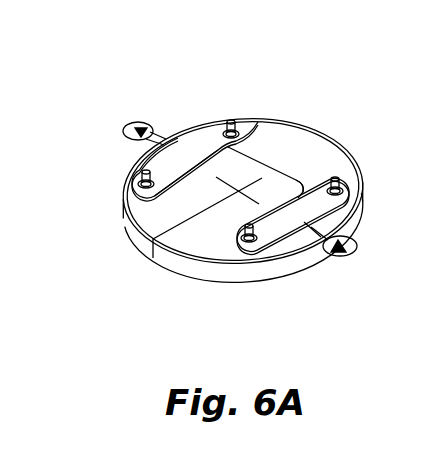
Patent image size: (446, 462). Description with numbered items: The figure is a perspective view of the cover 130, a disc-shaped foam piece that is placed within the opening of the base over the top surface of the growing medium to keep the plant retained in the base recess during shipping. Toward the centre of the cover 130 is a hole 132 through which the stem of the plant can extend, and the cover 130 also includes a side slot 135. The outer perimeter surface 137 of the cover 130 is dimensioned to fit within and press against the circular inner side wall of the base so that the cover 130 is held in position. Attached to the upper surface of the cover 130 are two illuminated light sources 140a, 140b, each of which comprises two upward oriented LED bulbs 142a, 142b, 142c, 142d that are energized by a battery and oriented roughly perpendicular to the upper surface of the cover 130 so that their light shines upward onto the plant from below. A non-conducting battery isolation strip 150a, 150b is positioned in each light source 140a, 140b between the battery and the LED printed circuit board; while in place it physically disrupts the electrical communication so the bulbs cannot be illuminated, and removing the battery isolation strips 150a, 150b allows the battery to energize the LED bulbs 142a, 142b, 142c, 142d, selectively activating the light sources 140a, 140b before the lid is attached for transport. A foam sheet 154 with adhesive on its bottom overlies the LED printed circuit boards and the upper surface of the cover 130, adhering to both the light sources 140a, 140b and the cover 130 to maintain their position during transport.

The cover 130 is at (105, 221).
The hole 132 is at (240, 190).
The side slot 135 is at (196, 214).
The outer perimeter surface 137 is at (309, 258).
The illuminated light source 140a is at (188, 148).
The illuminated light source 140b is at (323, 165).
The LED bulb 142a is at (138, 182).
The LED bulb 142b is at (250, 248).
The LED bulb 142c is at (241, 115).
The LED bulb 142d is at (341, 186).
The battery isolation strip 150a is at (128, 126).
The battery isolation strip 150b is at (356, 247).
The foam sheet 154 is at (273, 121).